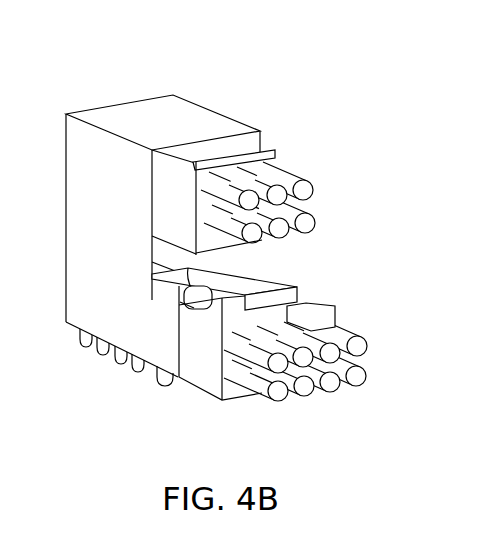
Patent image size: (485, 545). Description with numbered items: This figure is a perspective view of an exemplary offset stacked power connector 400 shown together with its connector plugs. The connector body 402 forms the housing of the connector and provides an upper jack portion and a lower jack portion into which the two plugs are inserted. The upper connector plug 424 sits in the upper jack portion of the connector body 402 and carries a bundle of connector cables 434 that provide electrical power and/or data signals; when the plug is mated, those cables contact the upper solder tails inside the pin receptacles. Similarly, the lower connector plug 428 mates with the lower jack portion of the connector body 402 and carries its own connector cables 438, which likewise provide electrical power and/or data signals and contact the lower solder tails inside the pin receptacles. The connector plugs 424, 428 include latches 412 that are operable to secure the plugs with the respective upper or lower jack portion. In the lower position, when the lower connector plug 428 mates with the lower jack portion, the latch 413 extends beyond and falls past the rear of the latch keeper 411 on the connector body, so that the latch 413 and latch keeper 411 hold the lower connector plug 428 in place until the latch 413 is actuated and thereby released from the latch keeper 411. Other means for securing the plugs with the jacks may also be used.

The offset stacked power connector 400 is at (89, 64).
The connector body 402 is at (121, 250).
The latch keeper 411 is at (203, 297).
The latches 412 is at (225, 242).
The latch 413 is at (224, 282).
The upper connector plug 424 is at (213, 149).
The lower connector plug 428 is at (300, 299).
The connector cables 434 is at (277, 230).
The connector cables 438 is at (330, 383).